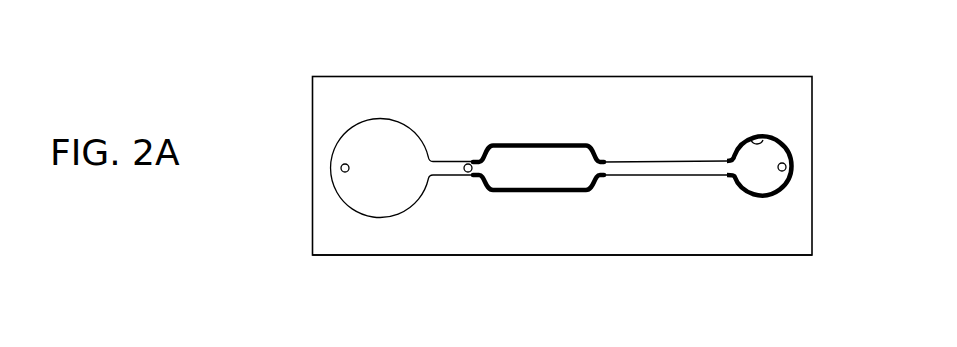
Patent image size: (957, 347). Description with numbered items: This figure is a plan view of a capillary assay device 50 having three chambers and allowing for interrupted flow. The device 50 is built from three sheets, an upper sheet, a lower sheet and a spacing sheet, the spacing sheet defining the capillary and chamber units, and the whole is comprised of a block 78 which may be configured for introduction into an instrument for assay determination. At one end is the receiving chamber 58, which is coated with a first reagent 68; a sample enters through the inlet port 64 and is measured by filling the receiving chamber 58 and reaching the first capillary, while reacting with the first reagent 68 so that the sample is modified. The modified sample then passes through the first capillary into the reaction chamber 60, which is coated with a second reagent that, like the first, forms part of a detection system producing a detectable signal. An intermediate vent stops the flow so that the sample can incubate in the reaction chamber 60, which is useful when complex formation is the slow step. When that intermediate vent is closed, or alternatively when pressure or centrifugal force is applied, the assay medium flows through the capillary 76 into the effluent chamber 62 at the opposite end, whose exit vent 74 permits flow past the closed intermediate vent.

The device 50 is at (527, 76).
The block 78 is at (610, 247).
The effluent chamber 62 is at (403, 202).
The exit vent 74 is at (341, 172).
The capillary 76 is at (443, 160).
The reaction chamber 60 is at (532, 186).
The receiving chamber 58 is at (747, 188).
The inlet port 64 is at (790, 166).
The first reagent 68 is at (767, 134).